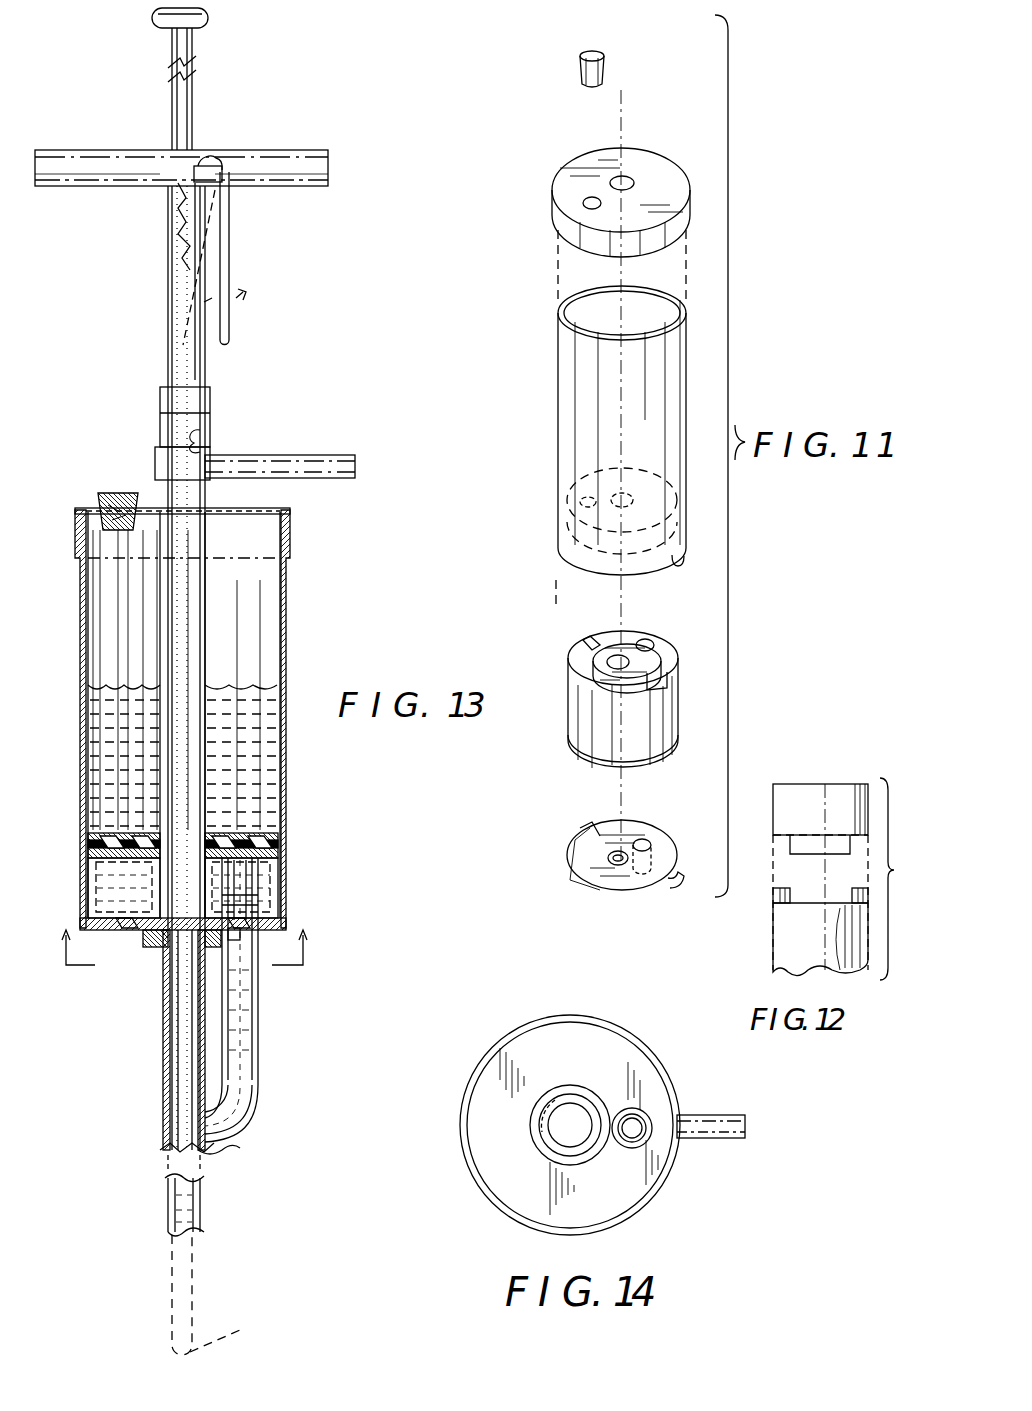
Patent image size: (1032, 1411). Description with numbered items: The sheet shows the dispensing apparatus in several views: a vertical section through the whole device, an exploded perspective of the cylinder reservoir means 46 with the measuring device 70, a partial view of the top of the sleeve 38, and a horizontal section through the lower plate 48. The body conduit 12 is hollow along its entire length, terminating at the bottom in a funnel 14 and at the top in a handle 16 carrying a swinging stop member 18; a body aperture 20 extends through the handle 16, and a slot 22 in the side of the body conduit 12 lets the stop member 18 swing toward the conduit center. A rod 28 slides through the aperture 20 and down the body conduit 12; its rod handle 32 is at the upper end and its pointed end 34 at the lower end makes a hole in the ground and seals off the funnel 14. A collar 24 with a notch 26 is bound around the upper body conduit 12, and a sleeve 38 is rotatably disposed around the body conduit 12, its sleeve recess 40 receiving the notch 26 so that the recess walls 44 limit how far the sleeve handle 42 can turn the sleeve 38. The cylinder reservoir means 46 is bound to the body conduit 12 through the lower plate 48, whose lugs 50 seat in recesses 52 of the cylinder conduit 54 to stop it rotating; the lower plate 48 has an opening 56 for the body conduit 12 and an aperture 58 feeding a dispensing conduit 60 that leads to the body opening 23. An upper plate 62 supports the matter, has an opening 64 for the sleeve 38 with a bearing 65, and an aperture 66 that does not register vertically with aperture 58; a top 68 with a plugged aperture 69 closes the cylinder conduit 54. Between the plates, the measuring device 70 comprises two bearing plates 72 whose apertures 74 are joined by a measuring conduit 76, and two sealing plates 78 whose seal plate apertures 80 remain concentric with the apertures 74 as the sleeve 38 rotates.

In FIG. 13, the body conduit 12 is at (205, 372).
In FIG. 13, the funnel 14 is at (240, 1214).
In FIG. 13, the handle 16 is at (302, 172).
In FIG. 13, the swinging stop member 18 is at (229, 246).
In FIG. 13, the body aperture 20 is at (196, 156).
In FIG. 13, the slot 22 is at (207, 283).
In FIG. 13, the opening 23 is at (232, 1150).
In FIG. 13, the collar 24 is at (210, 409).
In FIG. 12, the collar 24 is at (834, 805).
In FIG. 13, the notch 26 is at (200, 436).
In FIG. 12, the notch 26 is at (848, 845).
In FIG. 13, the rod 28 is at (190, 104).
In FIG. 14, the rod 28 is at (572, 1118).
In FIG. 13, the rod handle 32 is at (162, 12).
In FIG. 13, the pointed end 34 is at (246, 1258).
In FIG. 13, the sleeve 38 is at (188, 618).
In FIG. 12, the sleeve 38 is at (858, 918).
In FIG. 12, the sleeve recess 40 is at (816, 890).
In FIG. 13, the sleeve handle 42 is at (300, 456).
In FIG. 14, the sleeve handle 42 is at (718, 1140).
In FIG. 12, the recess walls 44 is at (775, 903).
In FIG. 13, the cylinder reservoir means 46 is at (300, 622).
In FIG. 11, the cylinder reservoir means 46 is at (732, 272).
In FIG. 13, the lower plate 48 is at (140, 932).
In FIG. 11, the lower plate 48 is at (582, 848).
In FIG. 14, the lower plate 48 is at (532, 1208).
In FIG. 11, the lugs 50 is at (580, 832).
In FIG. 11, the recesses 52 is at (675, 568).
In FIG. 13, the cylinder conduit 54 is at (284, 700).
In FIG. 11, the cylinder conduit 54 is at (590, 400).
In FIG. 11, the opening 56 is at (616, 862).
In FIG. 13, the aperture 58 is at (246, 932).
In FIG. 11, the aperture 58 is at (652, 843).
In FIG. 14, the aperture 58 is at (634, 1128).
In FIG. 13, the dispensing conduit 60 is at (258, 1082).
In FIG. 13, the upper plate 62 is at (90, 838).
In FIG. 11, the upper plate 62 is at (668, 518).
In FIG. 11, the opening 64 is at (628, 497).
In FIG. 13, the bearing 65 is at (288, 760).
In FIG. 11, the aperture 66 is at (580, 510).
In FIG. 13, the top 68 is at (152, 508).
In FIG. 11, the top 68 is at (582, 170).
In FIG. 11, the aperture 69 is at (580, 208).
In FIG. 13, the measuring device 70 is at (110, 498).
In FIG. 11, the measuring device 70 is at (598, 84).
In FIG. 13, the bearing plates 72 is at (90, 890).
In FIG. 11, the bearing plates 72 is at (580, 664).
In FIG. 13, the aperture 74 is at (256, 916).
In FIG. 13, the measuring conduit 76 is at (255, 886).
In FIG. 13, the sealing plates 78 is at (112, 840).
In FIG. 11, the sealing plates 78 is at (660, 664).
In FIG. 13, the seal plate aperture 80 is at (262, 800).